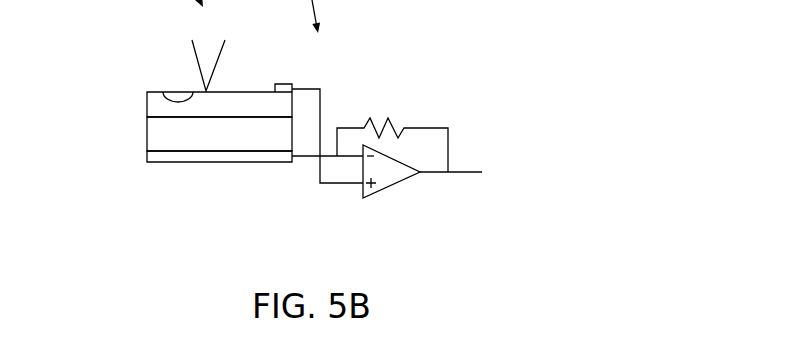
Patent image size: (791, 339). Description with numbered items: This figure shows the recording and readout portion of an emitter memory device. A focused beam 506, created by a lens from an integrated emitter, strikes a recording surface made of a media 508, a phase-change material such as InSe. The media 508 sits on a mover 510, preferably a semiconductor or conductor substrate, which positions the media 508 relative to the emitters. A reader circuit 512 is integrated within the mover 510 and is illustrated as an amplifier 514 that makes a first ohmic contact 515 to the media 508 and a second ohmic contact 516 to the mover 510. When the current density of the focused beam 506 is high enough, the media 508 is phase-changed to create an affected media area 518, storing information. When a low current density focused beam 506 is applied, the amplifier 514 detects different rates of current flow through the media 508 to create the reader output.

The focused beam 506 is at (183, 55).
The media 508 is at (147, 108).
The mover 510 is at (147, 133).
The reader circuit 512 is at (328, 68).
The amplifier 514 is at (405, 212).
The first ohmic contact 515 is at (277, 84).
The second ohmic contact 516 is at (277, 163).
The affected media area 518 is at (181, 91).